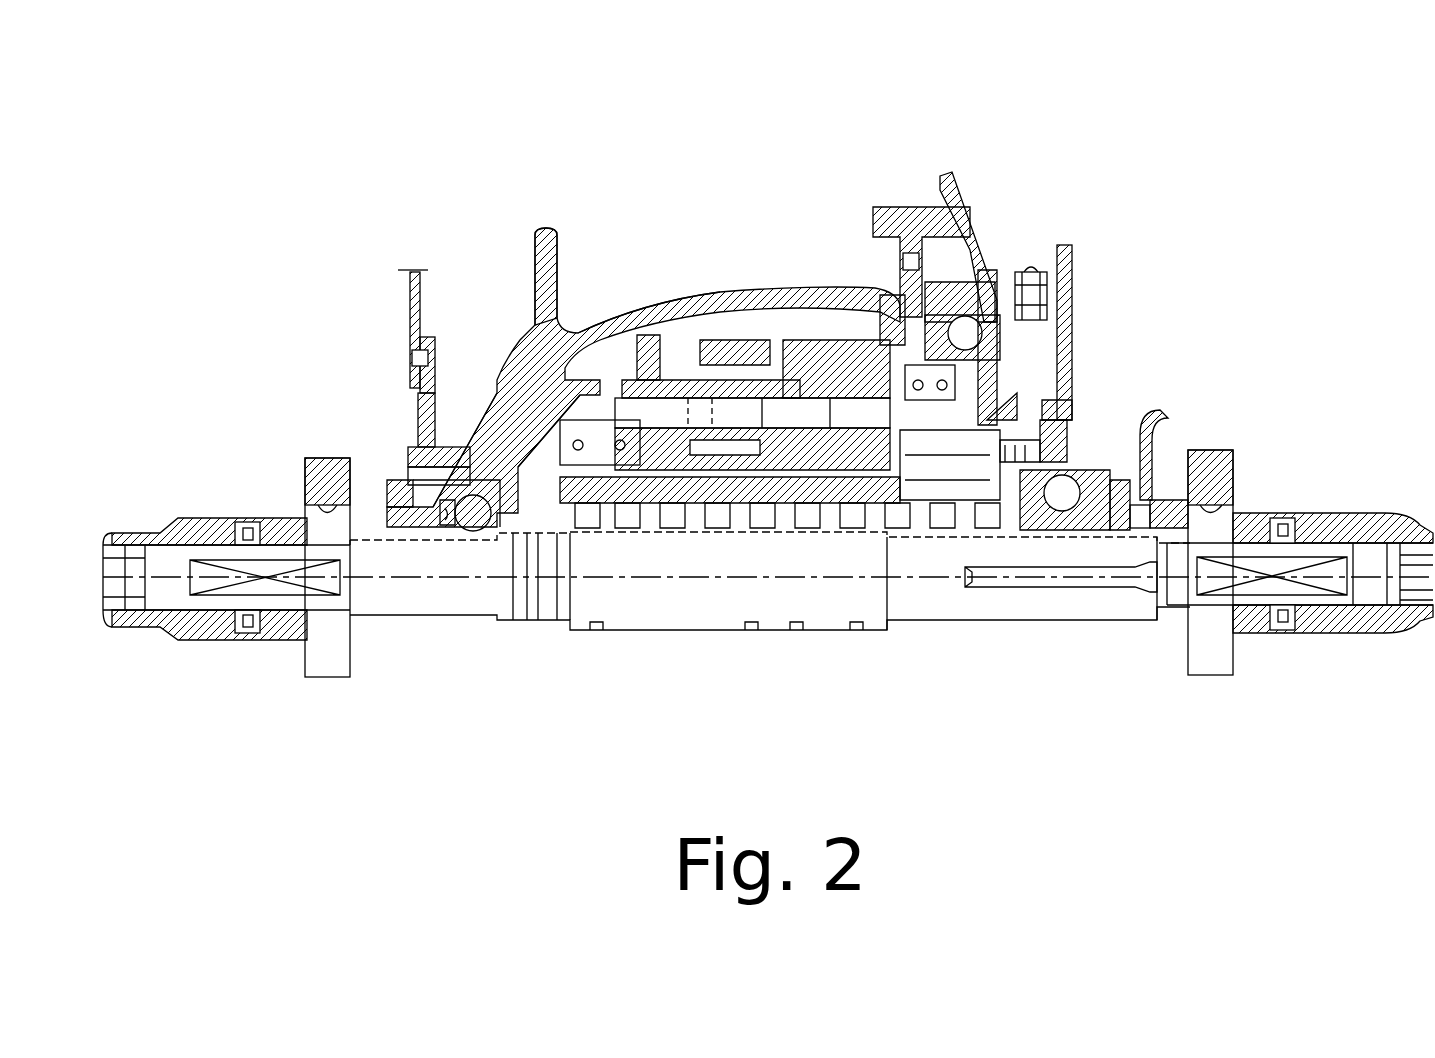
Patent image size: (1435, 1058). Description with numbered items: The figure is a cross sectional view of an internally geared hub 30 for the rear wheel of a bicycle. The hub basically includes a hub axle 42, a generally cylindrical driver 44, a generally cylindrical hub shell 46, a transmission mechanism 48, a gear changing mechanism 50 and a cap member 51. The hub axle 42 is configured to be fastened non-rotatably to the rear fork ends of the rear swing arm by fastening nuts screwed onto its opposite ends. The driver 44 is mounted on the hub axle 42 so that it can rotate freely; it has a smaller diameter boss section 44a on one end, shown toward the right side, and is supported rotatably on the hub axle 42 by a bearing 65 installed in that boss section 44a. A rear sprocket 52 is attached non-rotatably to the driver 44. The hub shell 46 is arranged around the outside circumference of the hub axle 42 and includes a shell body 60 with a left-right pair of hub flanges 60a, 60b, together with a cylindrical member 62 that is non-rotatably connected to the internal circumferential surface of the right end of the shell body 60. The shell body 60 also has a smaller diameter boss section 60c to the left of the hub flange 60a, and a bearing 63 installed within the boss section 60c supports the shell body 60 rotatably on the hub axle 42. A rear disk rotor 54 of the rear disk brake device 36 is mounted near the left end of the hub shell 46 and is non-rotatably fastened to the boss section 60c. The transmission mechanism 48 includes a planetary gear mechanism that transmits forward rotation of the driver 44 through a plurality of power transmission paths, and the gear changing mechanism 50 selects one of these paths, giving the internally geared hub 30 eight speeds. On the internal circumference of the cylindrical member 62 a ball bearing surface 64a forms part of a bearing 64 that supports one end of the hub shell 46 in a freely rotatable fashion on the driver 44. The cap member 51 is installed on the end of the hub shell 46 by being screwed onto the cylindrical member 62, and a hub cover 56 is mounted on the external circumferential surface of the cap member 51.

The internally geared hub 30 is at (752, 175).
The rear disk brake device 36 is at (411, 270).
The hub axle 42 is at (1195, 553).
The driver 44 is at (1040, 440).
The boss section 44a is at (1110, 470).
The hub shell 46 is at (681, 252).
The transmission mechanism 48 is at (800, 325).
The gear changing mechanism 50 is at (933, 530).
The cap member 51 is at (960, 272).
The rear sprocket 52 is at (1030, 318).
The rear disk rotor 54 is at (424, 345).
The hub cover 56 is at (952, 180).
The shell body 60 is at (613, 310).
The hub flange 60a is at (548, 230).
The hub flange 60b is at (915, 208).
The boss section 60c is at (487, 462).
The cylindrical member 62 is at (893, 308).
The bearing 63 is at (450, 522).
The bearing 64 is at (970, 330).
The ball bearing surface 64a is at (977, 350).
The bearing 65 is at (1073, 525).